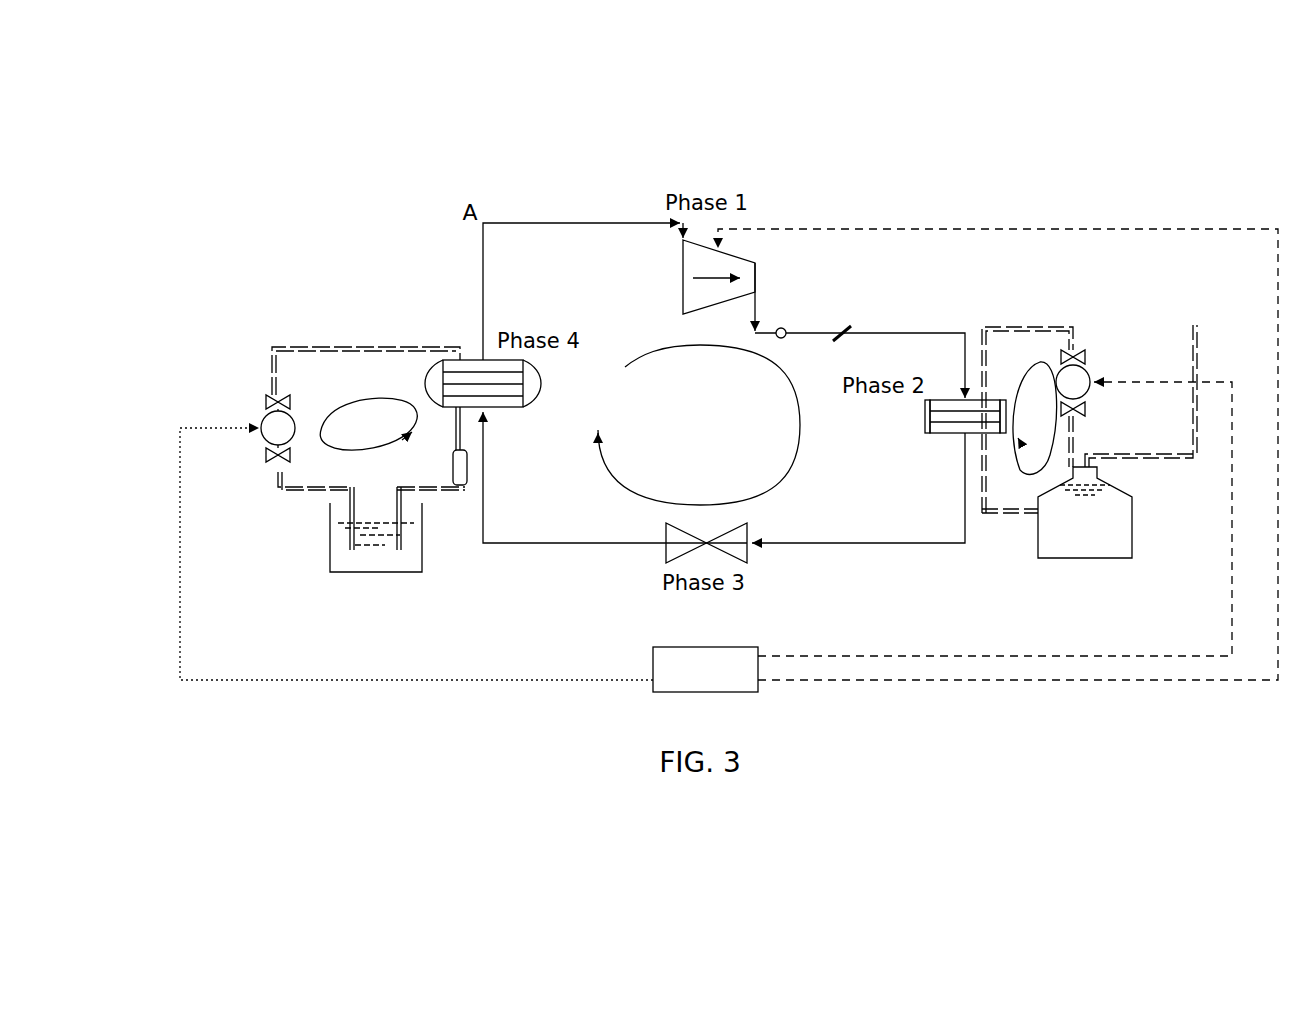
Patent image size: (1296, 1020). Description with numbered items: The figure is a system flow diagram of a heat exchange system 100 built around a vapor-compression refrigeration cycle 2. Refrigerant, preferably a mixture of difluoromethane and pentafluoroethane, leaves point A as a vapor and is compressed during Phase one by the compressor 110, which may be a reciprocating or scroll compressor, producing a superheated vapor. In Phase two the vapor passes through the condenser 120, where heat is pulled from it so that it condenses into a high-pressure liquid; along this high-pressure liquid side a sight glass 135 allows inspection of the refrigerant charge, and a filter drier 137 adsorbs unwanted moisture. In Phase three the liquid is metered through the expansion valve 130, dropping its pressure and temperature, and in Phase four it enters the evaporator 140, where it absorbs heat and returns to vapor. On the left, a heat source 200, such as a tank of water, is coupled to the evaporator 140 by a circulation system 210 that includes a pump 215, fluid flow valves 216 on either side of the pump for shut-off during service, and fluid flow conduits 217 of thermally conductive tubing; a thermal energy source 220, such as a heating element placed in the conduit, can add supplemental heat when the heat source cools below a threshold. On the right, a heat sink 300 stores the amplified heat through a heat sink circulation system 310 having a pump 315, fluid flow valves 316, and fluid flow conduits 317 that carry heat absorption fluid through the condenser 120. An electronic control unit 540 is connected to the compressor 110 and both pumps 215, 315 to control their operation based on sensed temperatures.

The vapor-compression refrigeration cycle 2 is at (699, 425).
The heat exchange system 100 is at (572, 160).
The compressor 110 is at (749, 255).
The condenser 120 is at (992, 393).
The expansion valve 130 is at (752, 562).
The sight glass 135 is at (785, 325).
The filter drier 137 is at (840, 329).
The evaporator 140 is at (457, 355).
The heat source 200 is at (349, 577).
The circulation system 210 is at (318, 421).
The pump 215 is at (268, 448).
The fluid flow valves 216 is at (262, 402).
The fluid flow conduits 217 is at (305, 343).
The thermal energy source 220 is at (462, 490).
The heat sink 300 is at (1092, 559).
The heat sink circulation system 310 is at (1106, 392).
The pump 315 is at (1094, 367).
The fluid flow valves 316 is at (1094, 404).
The fluid flow conduits 317 is at (987, 518).
The electronic control unit 540 is at (649, 655).